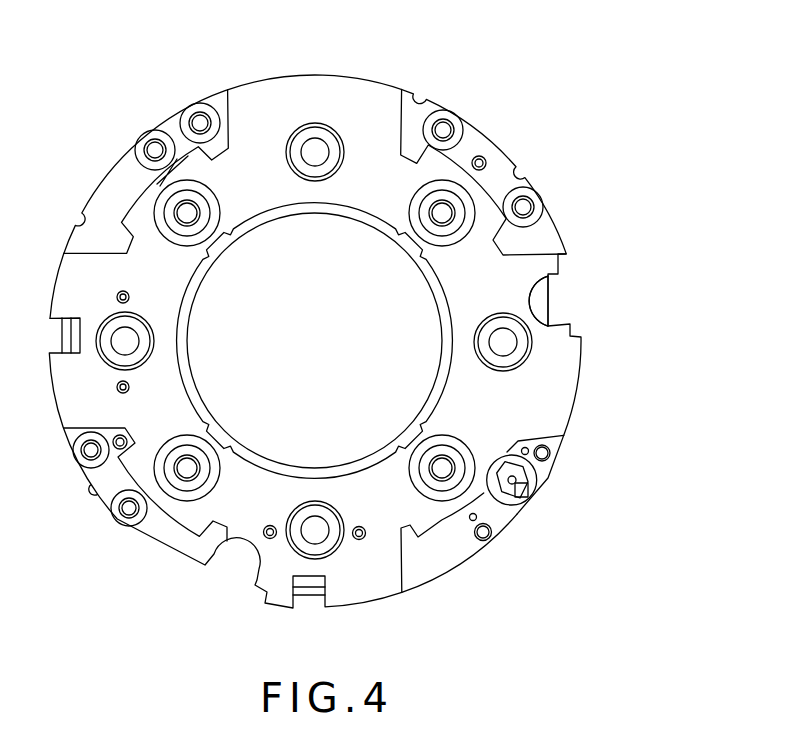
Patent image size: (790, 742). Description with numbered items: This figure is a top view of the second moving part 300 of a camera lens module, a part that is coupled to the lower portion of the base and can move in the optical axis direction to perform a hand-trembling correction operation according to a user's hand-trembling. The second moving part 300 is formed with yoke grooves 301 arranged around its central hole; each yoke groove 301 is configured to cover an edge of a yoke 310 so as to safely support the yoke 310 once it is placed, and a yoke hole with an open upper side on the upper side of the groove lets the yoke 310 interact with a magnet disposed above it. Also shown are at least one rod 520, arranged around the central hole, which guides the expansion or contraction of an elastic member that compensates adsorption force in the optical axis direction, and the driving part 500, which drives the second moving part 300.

The second moving part 300 is at (75, 71).
The yoke 310 is at (311, 150).
The rod 520 is at (443, 212).
The yoke groove 301 is at (526, 359).
The driving part 500 is at (532, 485).